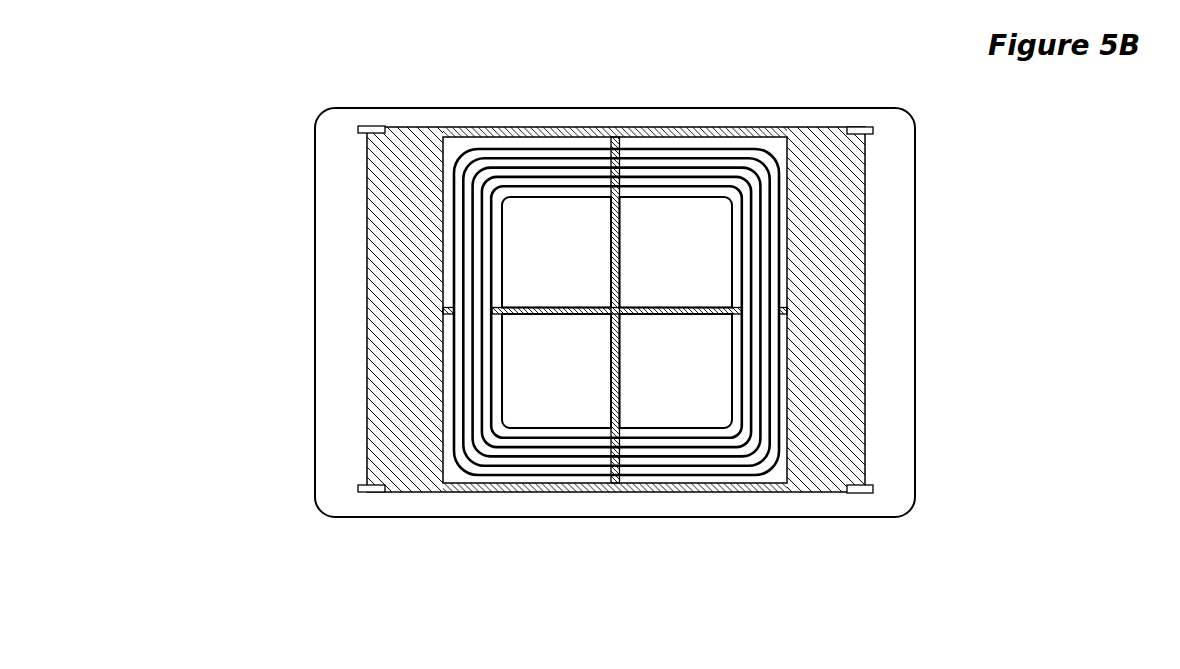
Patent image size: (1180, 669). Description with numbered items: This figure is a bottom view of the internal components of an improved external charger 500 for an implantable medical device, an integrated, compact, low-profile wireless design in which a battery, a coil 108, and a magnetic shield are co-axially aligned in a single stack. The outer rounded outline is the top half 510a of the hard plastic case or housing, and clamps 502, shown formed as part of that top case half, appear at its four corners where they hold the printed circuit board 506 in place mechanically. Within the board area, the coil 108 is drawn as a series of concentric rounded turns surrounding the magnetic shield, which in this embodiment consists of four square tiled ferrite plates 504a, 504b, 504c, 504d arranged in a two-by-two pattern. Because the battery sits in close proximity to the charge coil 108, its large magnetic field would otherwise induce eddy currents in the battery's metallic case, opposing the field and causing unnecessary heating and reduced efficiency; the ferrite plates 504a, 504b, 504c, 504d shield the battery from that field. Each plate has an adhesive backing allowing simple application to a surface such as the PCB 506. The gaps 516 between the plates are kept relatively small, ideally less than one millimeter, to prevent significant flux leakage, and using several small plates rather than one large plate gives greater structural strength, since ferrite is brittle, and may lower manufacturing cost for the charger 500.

The external charger 500 is at (270, 152).
The clamps 502 is at (358, 130).
The square ferrite plate 504a is at (571, 234).
The square ferrite plate 504b is at (701, 234).
The square ferrite plate 504c is at (573, 410).
The square ferrite plate 504d is at (701, 410).
The printed circuit board 506 is at (745, 495).
The top half of the housing 510a is at (913, 223).
The gaps 516 is at (615, 126).
The coil 108 is at (485, 475).